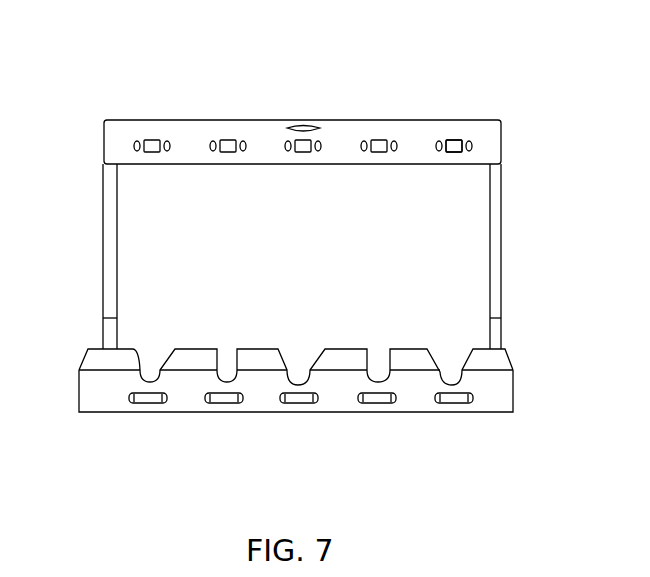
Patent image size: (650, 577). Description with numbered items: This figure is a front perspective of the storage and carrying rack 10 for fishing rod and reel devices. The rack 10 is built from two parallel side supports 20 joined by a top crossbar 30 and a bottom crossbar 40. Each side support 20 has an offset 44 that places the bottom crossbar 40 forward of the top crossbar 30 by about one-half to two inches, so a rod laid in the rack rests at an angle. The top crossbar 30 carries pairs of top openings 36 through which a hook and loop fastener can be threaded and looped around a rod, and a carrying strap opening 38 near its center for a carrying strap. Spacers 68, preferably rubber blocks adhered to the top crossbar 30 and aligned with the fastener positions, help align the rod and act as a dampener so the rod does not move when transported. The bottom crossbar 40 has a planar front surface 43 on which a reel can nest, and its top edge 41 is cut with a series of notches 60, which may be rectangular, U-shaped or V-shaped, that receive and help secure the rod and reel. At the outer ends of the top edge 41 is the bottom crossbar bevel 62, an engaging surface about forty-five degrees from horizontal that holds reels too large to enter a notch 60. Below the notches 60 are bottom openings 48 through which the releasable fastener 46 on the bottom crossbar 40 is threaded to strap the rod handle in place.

The storage and carrying rack 10 is at (281, 280).
The side support 20 is at (109, 193).
The top crossbar 30 is at (172, 121).
The top openings 36 is at (391, 140).
The carrying strap opening 38 is at (301, 124).
The bottom crossbar 40 is at (96, 413).
The top edge 41 is at (347, 345).
The front surface 43 is at (281, 393).
The offset 44 is at (104, 326).
The releasable fastener 46 is at (453, 405).
The bottom openings 48 is at (357, 405).
The notch 60 is at (450, 372).
The bottom crossbar bevel 62 is at (86, 357).
The spacer 68 is at (454, 139).